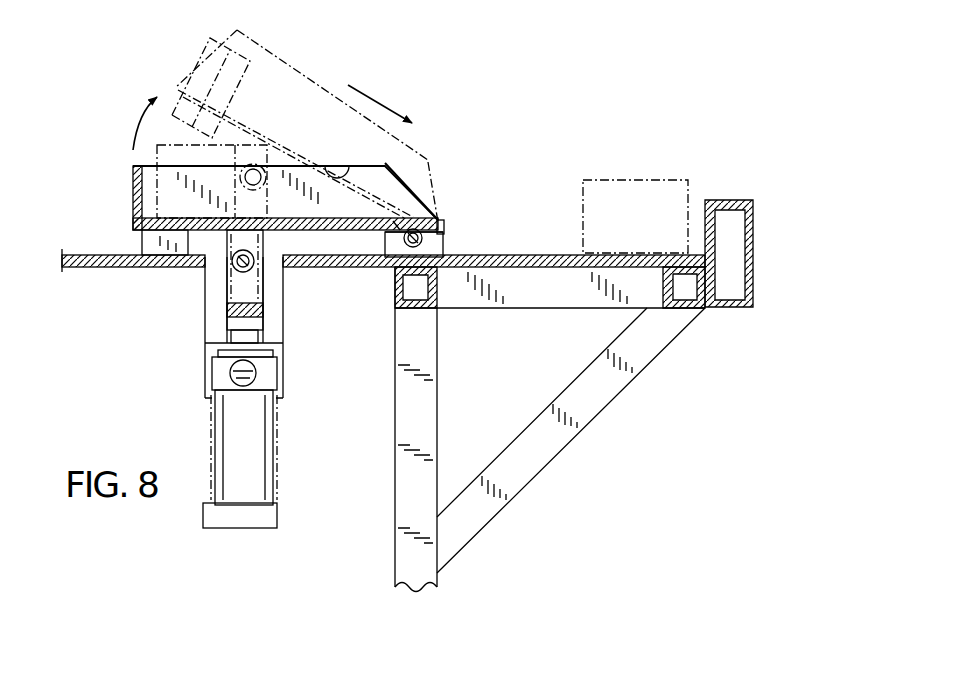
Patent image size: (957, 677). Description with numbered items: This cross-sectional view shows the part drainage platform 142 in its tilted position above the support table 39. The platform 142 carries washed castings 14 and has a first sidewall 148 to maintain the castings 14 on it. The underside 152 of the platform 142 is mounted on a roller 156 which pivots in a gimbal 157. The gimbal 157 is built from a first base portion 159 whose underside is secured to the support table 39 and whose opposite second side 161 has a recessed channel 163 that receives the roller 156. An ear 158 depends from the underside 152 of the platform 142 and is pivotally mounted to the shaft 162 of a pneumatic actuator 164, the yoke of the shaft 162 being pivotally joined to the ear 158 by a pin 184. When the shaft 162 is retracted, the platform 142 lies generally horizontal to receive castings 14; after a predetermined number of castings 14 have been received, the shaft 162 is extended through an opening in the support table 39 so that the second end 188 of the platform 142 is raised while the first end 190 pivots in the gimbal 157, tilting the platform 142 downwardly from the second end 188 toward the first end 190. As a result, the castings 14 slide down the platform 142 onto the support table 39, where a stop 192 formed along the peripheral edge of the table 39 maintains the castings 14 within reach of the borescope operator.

The casting 14 is at (265, 57).
The support table 39 is at (470, 253).
The part drainage platform 142 is at (318, 164).
The first sidewall 148 is at (390, 183).
The underside 152 is at (335, 184).
The roller 156 is at (408, 228).
The gimbal 157 is at (378, 245).
The ear 158 is at (243, 163).
The first base portion 159 is at (433, 250).
The second side 161 is at (387, 233).
The shaft 162 is at (240, 288).
The recessed channel 163 is at (393, 221).
The pneumatic actuator 164 is at (230, 462).
The pin 184 is at (240, 255).
The second end 188 is at (203, 84).
The first end 190 is at (445, 228).
The stop 192 is at (708, 215).